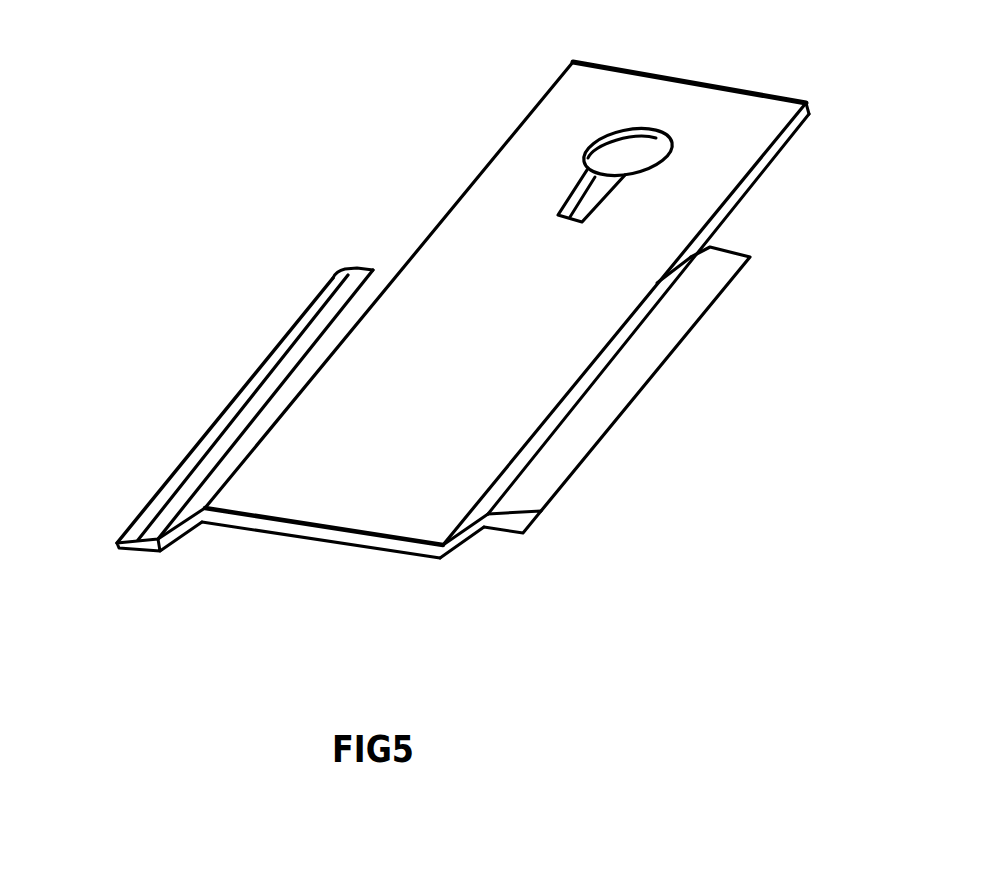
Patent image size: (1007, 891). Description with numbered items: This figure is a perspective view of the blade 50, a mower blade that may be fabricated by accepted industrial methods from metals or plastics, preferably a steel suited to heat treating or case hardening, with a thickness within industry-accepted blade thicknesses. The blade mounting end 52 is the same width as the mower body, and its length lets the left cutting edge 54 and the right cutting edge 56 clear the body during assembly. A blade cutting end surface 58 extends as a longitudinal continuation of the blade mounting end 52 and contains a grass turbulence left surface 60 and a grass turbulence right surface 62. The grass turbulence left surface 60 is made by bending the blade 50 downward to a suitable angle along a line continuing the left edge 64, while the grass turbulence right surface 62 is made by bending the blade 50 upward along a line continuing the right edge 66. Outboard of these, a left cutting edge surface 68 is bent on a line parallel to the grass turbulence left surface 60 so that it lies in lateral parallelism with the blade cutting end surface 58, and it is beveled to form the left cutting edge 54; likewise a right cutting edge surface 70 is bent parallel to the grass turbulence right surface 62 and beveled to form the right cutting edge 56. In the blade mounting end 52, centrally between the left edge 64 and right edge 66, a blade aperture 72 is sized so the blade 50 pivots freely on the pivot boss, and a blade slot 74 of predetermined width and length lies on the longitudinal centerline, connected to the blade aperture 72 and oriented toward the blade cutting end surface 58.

The blade 50 is at (311, 530).
The blade mounting end 52 is at (607, 92).
The left cutting edge 54 is at (247, 382).
The right cutting edge 56 is at (643, 392).
The blade cutting end surface 58 is at (355, 492).
The grass turbulence left surface 60 is at (200, 498).
The grass turbulence right surface 62 is at (500, 485).
The left edge 64 is at (480, 158).
The right edge 66 is at (762, 163).
The left cutting edge surface 68 is at (310, 343).
The right cutting edge surface 70 is at (490, 531).
The blade aperture 72 is at (642, 148).
The blade slot 74 is at (592, 200).